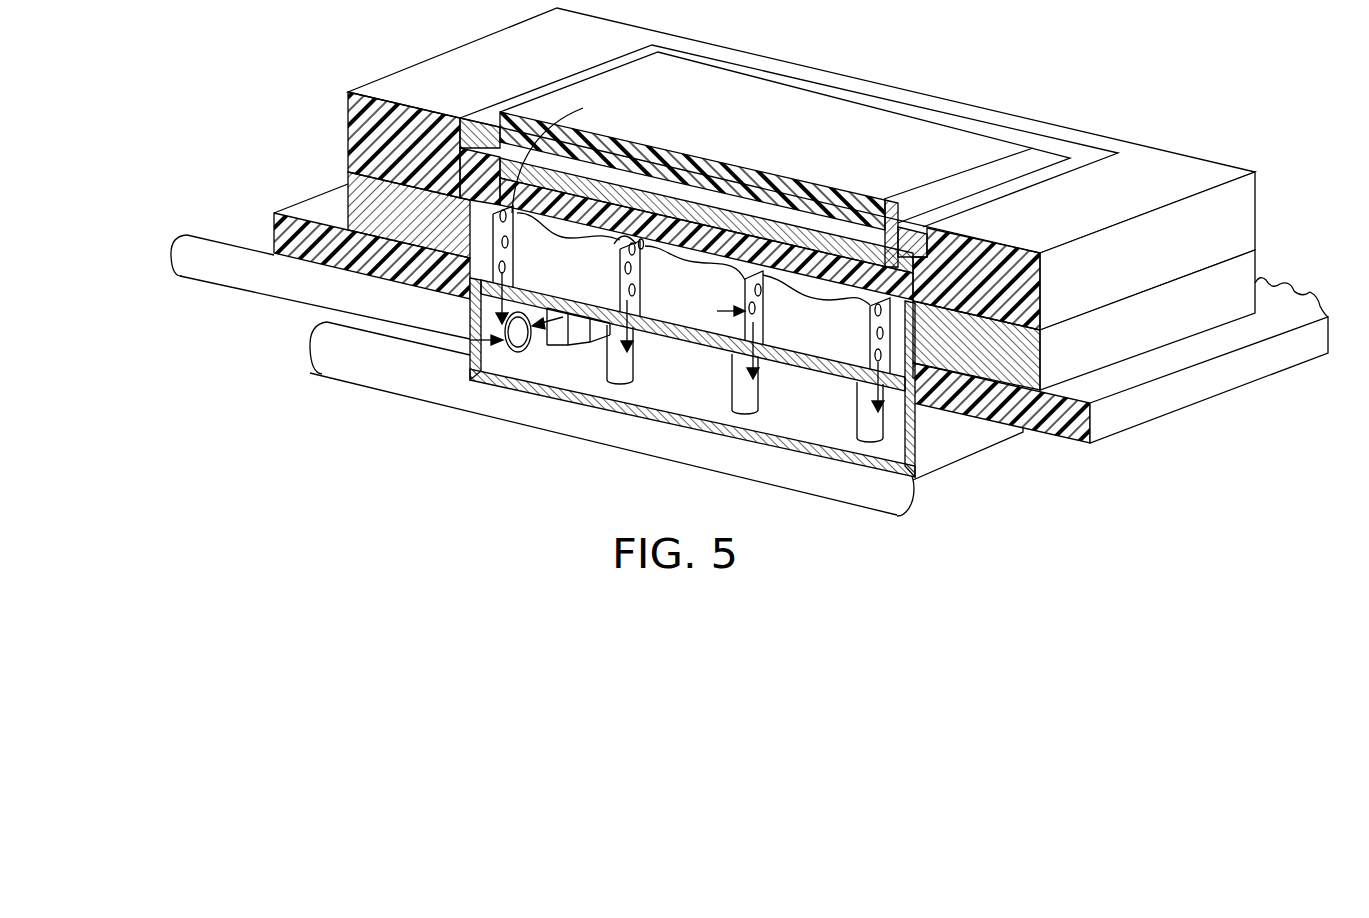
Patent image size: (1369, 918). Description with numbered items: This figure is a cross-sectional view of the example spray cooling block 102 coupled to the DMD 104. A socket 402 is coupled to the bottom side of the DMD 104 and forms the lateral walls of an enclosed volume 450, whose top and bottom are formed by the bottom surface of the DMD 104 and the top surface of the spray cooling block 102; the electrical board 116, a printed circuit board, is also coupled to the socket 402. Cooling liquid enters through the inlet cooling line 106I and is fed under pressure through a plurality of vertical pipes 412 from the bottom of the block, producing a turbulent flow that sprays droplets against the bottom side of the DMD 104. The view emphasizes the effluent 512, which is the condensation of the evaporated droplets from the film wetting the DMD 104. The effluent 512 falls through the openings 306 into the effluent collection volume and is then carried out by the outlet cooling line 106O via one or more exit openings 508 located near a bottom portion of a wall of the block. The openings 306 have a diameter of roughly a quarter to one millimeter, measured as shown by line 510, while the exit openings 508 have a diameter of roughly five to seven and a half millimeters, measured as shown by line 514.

The spray cooling block 102 is at (967, 440).
The DMD 104 is at (915, 120).
The outlet cooling line 106O is at (170, 243).
The inlet cooling line 106I is at (307, 347).
The electrical board 116 is at (298, 212).
The openings 306 is at (600, 266).
The socket 402 is at (357, 207).
The vertical pipes 412 is at (727, 378).
The enclosed volume 450 is at (827, 290).
The exit openings 508 is at (521, 335).
The line 510 is at (777, 322).
The effluent 512 is at (512, 243).
The line 514 is at (477, 352).